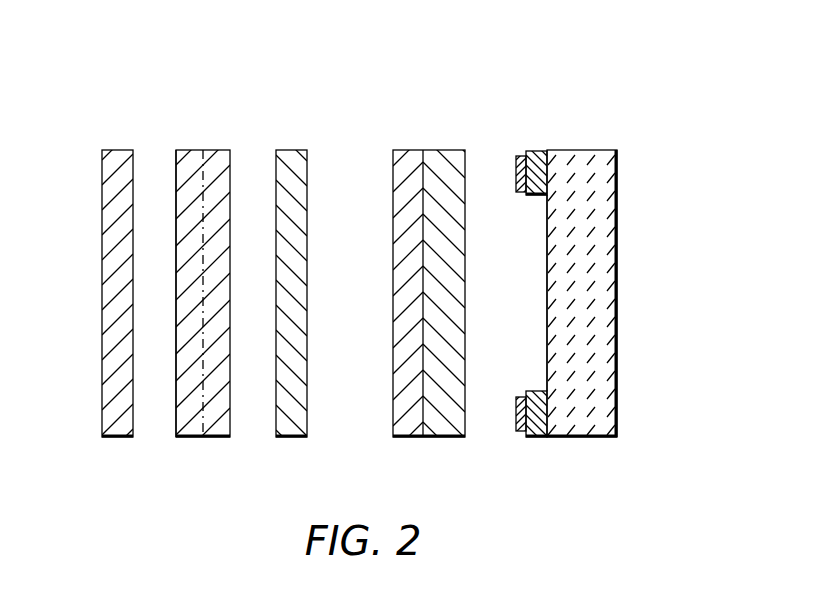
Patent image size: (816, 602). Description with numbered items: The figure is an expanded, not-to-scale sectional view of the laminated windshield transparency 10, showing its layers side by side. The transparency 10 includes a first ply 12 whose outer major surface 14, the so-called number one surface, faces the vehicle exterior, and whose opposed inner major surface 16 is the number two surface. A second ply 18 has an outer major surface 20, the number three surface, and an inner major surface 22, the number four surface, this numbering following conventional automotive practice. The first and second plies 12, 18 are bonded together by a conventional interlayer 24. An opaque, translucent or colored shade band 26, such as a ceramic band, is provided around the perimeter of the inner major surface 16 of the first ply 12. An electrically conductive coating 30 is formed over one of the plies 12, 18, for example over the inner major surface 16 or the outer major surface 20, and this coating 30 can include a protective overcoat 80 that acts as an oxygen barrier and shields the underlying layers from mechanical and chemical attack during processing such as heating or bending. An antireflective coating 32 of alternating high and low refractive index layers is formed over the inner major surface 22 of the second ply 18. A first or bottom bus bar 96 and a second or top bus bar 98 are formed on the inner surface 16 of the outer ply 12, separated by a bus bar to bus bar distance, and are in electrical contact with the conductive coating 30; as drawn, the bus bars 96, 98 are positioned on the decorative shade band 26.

The transparency 10 is at (57, 78).
The first ply 12 is at (580, 438).
The outer major surface 14 is at (552, 296).
The inner major surface 16 is at (546, 363).
The second ply 18 is at (200, 438).
The outer major surface 20 is at (201, 299).
The inner major surface 22 is at (176, 166).
The interlayer 24 is at (291, 150).
The shade band 26 is at (537, 151).
The electrically conductive coating 30 is at (427, 300).
The antireflective coating 32 is at (117, 438).
The protective overcoat 80 is at (410, 438).
The first bus bar 96 is at (520, 432).
The second bus bar 98 is at (519, 156).